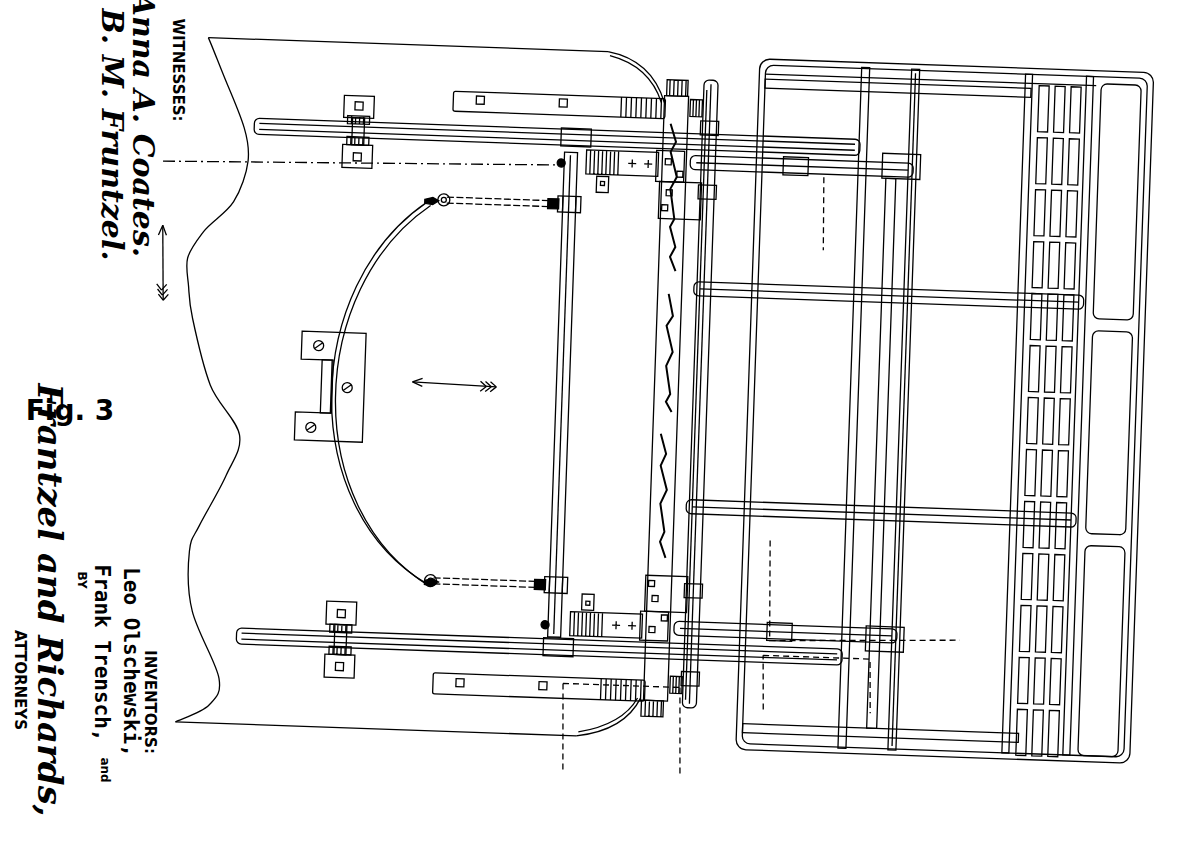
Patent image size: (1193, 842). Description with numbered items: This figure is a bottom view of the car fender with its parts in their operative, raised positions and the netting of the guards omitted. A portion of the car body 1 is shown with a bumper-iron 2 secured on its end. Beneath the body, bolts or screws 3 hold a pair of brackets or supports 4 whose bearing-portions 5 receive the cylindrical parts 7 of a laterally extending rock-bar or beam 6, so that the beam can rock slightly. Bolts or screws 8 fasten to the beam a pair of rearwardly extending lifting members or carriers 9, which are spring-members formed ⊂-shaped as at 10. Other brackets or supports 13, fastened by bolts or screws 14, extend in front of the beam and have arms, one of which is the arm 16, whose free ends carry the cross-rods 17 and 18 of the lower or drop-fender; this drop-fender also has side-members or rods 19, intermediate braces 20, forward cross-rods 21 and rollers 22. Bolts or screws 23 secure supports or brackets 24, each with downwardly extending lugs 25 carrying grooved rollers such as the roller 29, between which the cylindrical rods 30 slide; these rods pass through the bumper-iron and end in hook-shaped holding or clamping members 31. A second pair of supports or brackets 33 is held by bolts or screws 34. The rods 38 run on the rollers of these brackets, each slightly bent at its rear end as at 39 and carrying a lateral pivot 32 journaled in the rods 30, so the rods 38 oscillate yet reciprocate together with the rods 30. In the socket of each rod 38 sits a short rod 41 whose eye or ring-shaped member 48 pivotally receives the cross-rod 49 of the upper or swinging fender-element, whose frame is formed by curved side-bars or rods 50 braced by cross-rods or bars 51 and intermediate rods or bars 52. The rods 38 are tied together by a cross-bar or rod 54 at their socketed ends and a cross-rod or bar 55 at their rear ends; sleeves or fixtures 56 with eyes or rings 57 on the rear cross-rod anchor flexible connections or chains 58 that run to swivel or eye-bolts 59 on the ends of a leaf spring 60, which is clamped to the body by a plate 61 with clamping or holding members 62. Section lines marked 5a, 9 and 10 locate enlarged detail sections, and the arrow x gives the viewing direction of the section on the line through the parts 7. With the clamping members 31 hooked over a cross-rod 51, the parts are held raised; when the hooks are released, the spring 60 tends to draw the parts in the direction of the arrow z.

The car body 1 is at (212, 408).
The bumper-iron 2 is at (614, 64).
The bolts or screws 3 is at (473, 103).
The brackets or supports 4 is at (524, 104).
The bearing-portions 5 is at (636, 98).
The section line 5a— 5a is at (818, 684).
The rock-bar or beam 6 is at (670, 81).
The cylindrical parts 7 is at (688, 98).
The bolts or screws 8 is at (655, 193).
The lifting members or carriers 9 is at (618, 180).
The ⊂-shaped portion 10 is at (623, 737).
The brackets or supports 13 is at (660, 222).
The bolts or screws 14 is at (652, 183).
The arm 16 is at (710, 190).
The cross-rod 17 is at (710, 128).
The cross-rod 18 is at (708, 102).
The side-members or rods 19 is at (795, 87).
The braces 20 is at (950, 282).
The cross-rods 21 is at (1028, 115).
The rollers 22 is at (1044, 168).
The bolts or screws 23 is at (351, 113).
The supports or brackets 24 is at (334, 112).
The lugs 25 is at (362, 130).
The grooved roller or wheel 29 is at (358, 142).
The cylindrical rods 30 is at (282, 134).
The hook-shaped holding or clamping members 31 is at (859, 132).
The pivots 32 is at (558, 137).
The supports or brackets 33 is at (622, 180).
The bolts or screws 34 is at (595, 197).
The rods 38 is at (790, 172).
The bent rear end 39 is at (550, 171).
The short rod 41 is at (886, 150).
The eye or ring-shaped member 48 is at (912, 165).
The cross-rod 49 is at (909, 206).
The side-bars or rods 50 is at (897, 57).
The cross-rods or bars 51 is at (757, 242).
The intermediate rods or bars 52 is at (1100, 303).
The cross-bar or rod 54 is at (889, 397).
The cross-rod or bar 55 is at (570, 420).
The sleeves or fixtures 56 is at (556, 219).
The eyes or rings 57 is at (540, 213).
The flexible connection or chain 58 is at (478, 214).
The swivel or eye-bolts 59 is at (441, 203).
The leaf spring 60 is at (418, 213).
The plate 61 is at (366, 360).
The clamping or holding members 62 is at (320, 398).
The arrow x is at (175, 251).
The arrow z is at (452, 398).